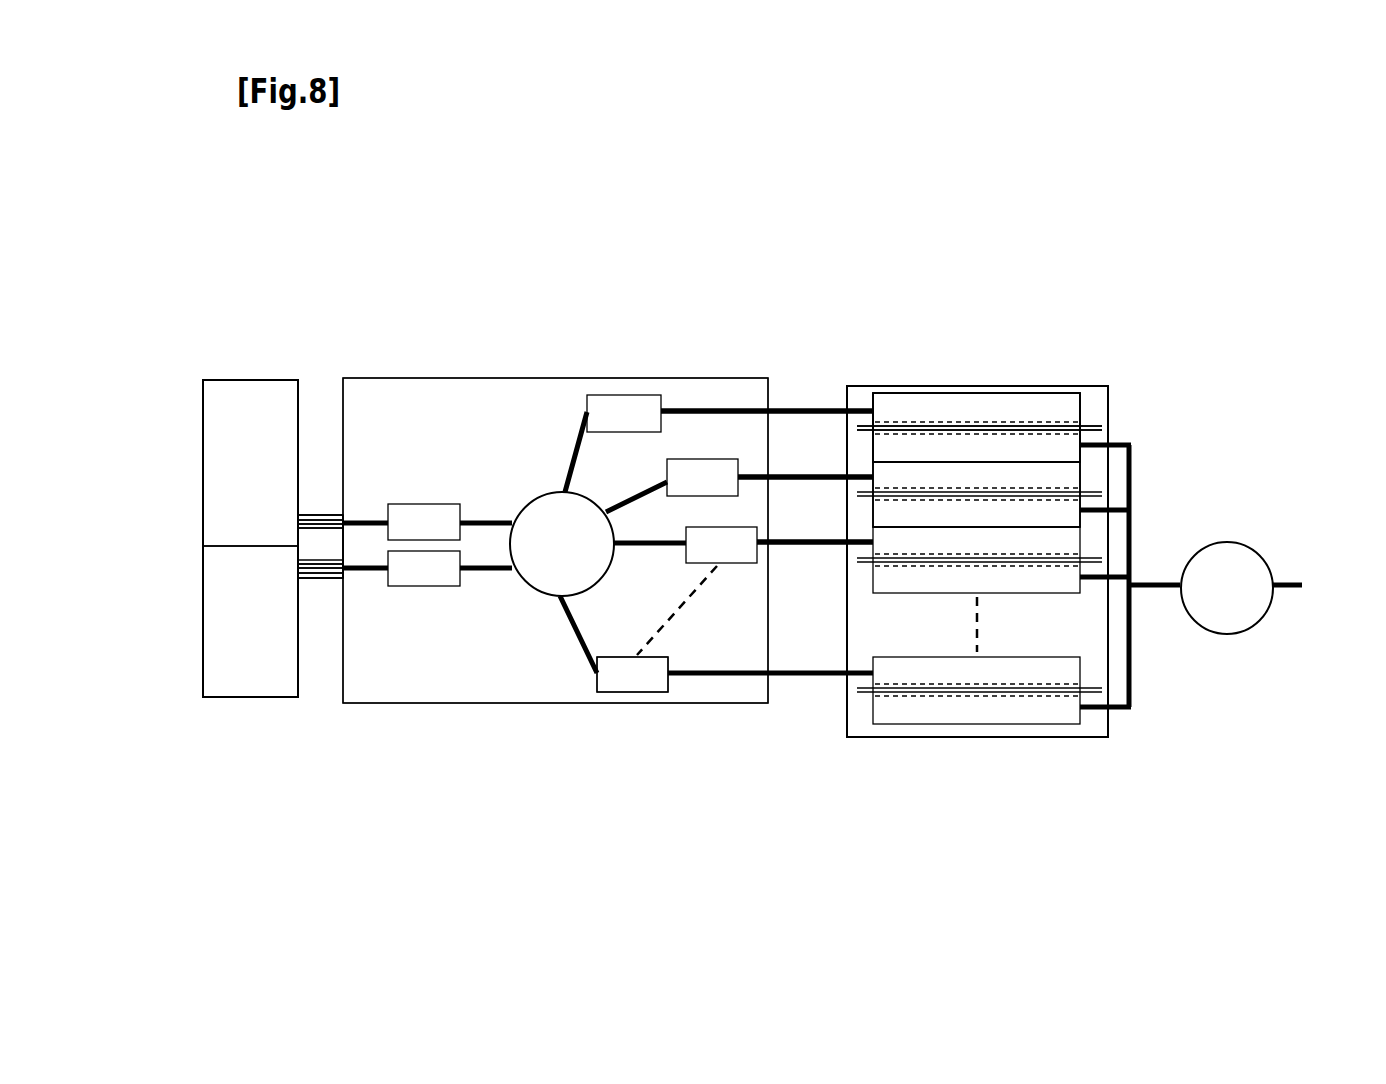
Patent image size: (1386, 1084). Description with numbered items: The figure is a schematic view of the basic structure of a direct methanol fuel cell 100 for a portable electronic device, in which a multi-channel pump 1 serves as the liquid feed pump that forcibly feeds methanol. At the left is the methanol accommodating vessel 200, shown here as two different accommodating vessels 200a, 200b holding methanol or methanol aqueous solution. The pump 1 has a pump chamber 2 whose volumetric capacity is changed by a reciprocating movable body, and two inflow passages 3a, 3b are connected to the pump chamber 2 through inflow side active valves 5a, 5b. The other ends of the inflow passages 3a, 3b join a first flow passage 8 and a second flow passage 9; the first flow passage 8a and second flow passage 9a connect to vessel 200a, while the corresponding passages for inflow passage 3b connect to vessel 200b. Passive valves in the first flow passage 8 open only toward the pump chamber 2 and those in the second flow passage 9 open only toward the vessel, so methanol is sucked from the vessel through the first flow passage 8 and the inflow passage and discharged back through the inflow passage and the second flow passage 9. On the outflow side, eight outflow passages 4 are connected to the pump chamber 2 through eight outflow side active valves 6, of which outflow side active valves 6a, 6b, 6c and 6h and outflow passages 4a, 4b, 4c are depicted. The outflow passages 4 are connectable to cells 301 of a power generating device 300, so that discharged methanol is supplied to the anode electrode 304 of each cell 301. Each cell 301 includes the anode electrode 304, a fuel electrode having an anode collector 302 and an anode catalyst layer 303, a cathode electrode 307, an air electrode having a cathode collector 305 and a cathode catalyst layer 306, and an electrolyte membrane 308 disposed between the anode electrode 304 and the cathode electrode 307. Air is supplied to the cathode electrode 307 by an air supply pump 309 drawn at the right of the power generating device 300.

The direct methanol fuel cell 100 is at (569, 232).
The methanol accommodating vessel 200 is at (243, 368).
The accommodating vessel 200a is at (227, 445).
The accommodating vessel 200b is at (223, 637).
The first flow passage 8 is at (323, 578).
The second flow passage 9 is at (323, 675).
The first flow passage 8a is at (315, 513).
The second flow passage 9a is at (323, 527).
The multi-channel pump 1 is at (502, 370).
The pump chamber 2 is at (527, 588).
The inflow passage 3a is at (365, 517).
The inflow passage 3b is at (362, 573).
The inflow side active valve 5a is at (427, 510).
The inflow side active valve 5b is at (423, 587).
The outflow side active valve 6 is at (627, 702).
The outflow side active valve 6a is at (618, 402).
The outflow side active valve 6b is at (689, 467).
The outflow side active valve 6c is at (740, 552).
The outflow side active valve 6h is at (650, 687).
The outflow passage 4 is at (818, 395).
The outflow passage 4a is at (707, 410).
The outflow passage 4b is at (757, 476).
The outflow passage 4c is at (797, 547).
The power generating device 300 is at (911, 378).
The cell 301 is at (986, 384).
The anode collector 302 is at (1032, 407).
The anode catalyst layer 303 is at (1047, 422).
The anode electrode 304 is at (1157, 290).
The cathode collector 305 is at (1007, 450).
The cathode catalyst layer 306 is at (1082, 435).
The cathode electrode 307 is at (1268, 445).
The electrolyte membrane 308 is at (1087, 430).
The air supply pump 309 is at (1233, 632).